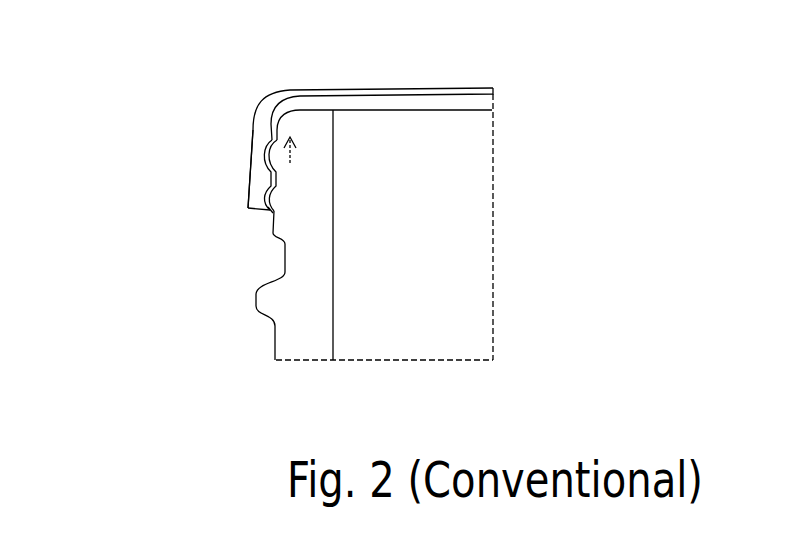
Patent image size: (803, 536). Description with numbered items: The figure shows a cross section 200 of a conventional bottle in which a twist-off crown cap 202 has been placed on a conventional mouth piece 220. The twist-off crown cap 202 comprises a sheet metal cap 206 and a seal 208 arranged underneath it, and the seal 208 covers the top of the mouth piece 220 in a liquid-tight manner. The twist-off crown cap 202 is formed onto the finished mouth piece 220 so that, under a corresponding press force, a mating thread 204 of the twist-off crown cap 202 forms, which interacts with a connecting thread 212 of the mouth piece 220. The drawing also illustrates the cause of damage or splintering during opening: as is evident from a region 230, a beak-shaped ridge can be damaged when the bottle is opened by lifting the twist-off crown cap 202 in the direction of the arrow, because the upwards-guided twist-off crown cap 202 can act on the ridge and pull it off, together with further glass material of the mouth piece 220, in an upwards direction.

The cross section 200 is at (131, 70).
The twist-off crown cap 202 is at (240, 136).
The mating thread 204 is at (258, 167).
The sheet metal cap 206 is at (385, 88).
The seal 208 is at (318, 90).
The connecting thread 212 is at (266, 210).
The mouth piece 220 is at (294, 355).
The region 230 is at (263, 118).